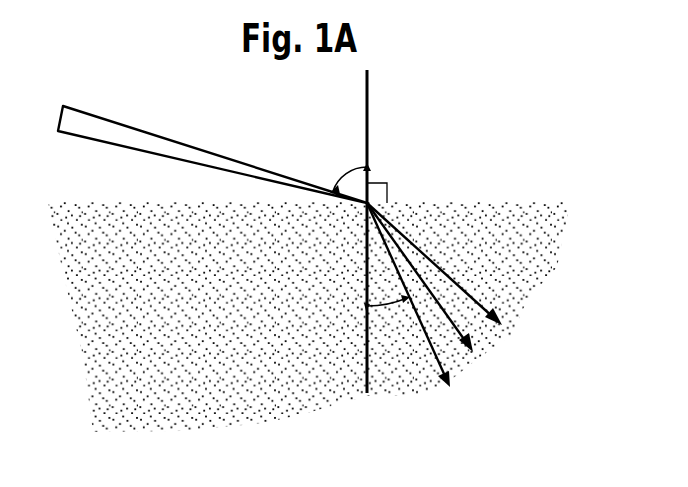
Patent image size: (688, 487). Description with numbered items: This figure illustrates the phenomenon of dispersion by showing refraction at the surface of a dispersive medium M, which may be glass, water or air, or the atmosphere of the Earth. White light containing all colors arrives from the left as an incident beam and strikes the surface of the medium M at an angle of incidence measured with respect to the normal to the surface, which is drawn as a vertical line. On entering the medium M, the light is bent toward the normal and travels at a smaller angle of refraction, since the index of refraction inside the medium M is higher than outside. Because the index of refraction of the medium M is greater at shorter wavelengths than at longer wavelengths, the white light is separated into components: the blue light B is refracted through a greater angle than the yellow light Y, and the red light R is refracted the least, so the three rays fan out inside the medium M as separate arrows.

The dispersive medium M is at (428, 208).
The red light R is at (480, 306).
The yellow light Y is at (460, 330).
The blue light B is at (435, 362).